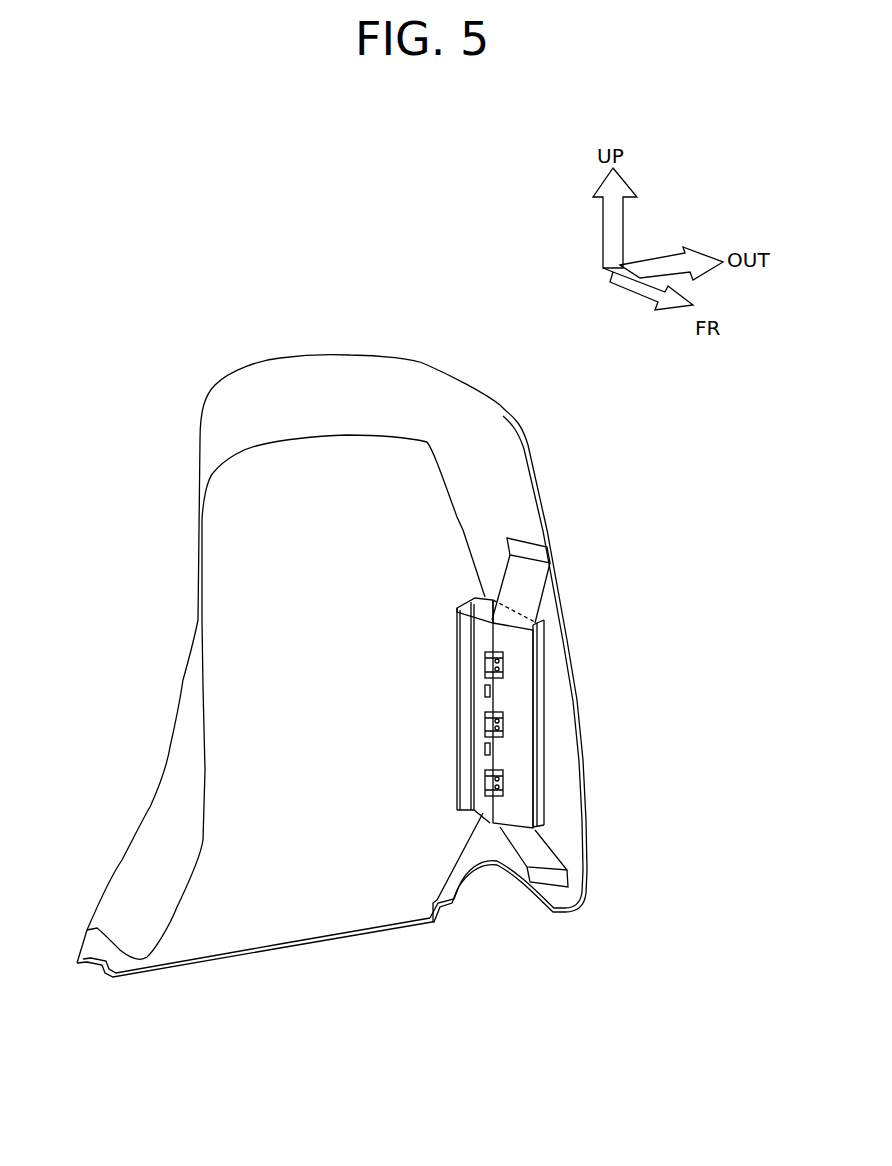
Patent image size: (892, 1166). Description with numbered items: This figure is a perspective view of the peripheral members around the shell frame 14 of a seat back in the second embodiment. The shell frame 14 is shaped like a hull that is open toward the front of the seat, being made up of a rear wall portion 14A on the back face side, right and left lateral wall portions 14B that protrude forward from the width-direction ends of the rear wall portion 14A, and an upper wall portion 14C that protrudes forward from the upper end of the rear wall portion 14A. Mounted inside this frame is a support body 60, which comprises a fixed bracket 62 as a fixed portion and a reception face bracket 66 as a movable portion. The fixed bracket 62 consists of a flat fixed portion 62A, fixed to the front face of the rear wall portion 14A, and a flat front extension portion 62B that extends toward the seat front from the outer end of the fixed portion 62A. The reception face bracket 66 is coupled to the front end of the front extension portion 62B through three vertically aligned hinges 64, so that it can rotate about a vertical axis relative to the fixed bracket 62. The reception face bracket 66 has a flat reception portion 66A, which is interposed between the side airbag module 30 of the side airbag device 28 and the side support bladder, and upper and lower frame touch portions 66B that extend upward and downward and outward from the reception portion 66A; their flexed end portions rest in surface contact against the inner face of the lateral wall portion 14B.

The shell frame 14 is at (392, 641).
The rear wall portion 14A is at (318, 910).
The lateral wall portion 14B is at (182, 888).
The upper wall portion 14C is at (350, 373).
The side airbag device 28 is at (550, 657).
The side airbag module 30 is at (567, 551).
The support body 60 is at (502, 712).
The fixed bracket 62 is at (436, 713).
The fixed portion 62A is at (467, 755).
The front extension portion 62B is at (480, 632).
The hinge 64 is at (485, 668).
The reception face bracket 66 is at (579, 712).
The reception portion 66A is at (520, 745).
The frame touch portion 66B is at (535, 587).